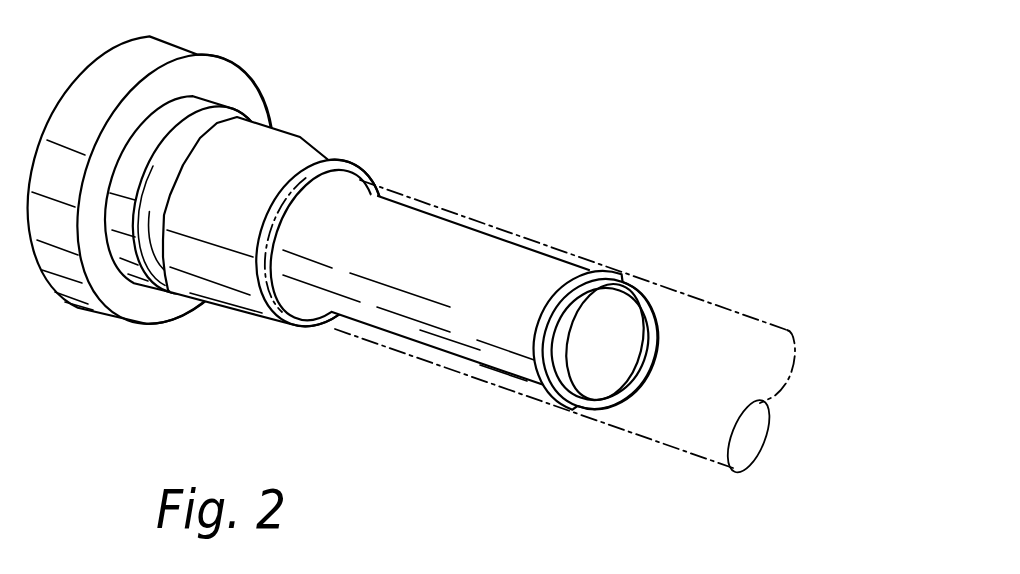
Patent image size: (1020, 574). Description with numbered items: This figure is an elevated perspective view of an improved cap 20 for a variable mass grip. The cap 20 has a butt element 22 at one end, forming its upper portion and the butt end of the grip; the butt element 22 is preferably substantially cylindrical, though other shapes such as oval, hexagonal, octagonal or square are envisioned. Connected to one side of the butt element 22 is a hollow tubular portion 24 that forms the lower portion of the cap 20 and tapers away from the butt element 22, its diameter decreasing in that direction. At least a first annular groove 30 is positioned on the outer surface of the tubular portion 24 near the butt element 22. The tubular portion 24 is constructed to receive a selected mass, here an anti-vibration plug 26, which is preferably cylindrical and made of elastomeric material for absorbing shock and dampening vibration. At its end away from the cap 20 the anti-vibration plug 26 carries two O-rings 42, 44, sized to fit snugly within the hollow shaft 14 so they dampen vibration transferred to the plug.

The hollow shaft 14 is at (675, 445).
The cap 20 is at (391, 213).
The butt element 22 is at (160, 52).
The tubular portion 24 is at (226, 293).
The anti-vibration plug 26 is at (460, 362).
The first annular groove 30 is at (178, 145).
The O-ring 42 is at (575, 287).
The O-ring 44 is at (573, 310).